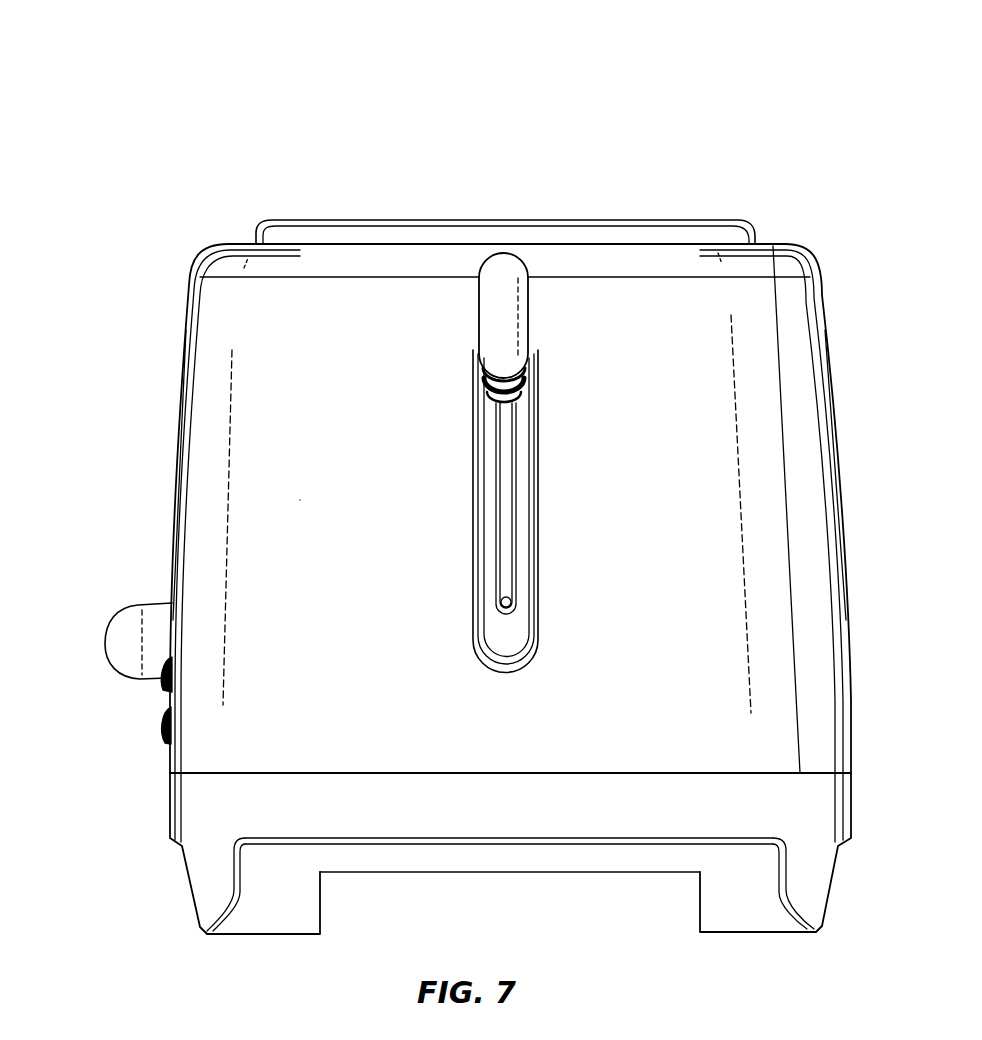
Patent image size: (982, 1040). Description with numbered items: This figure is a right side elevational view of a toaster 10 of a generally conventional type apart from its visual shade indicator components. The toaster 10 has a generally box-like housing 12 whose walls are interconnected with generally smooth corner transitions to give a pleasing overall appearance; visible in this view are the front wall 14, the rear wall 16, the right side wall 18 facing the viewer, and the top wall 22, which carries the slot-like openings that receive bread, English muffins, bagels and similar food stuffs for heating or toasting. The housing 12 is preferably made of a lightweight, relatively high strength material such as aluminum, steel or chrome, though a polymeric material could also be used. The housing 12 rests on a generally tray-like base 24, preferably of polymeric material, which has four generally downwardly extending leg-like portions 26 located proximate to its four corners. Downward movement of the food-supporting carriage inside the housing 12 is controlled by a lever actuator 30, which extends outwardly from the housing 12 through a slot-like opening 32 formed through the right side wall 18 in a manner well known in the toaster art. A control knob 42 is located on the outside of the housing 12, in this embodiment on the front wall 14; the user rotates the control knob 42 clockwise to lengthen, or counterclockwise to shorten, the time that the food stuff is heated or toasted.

The toaster 10 is at (195, 126).
The housing 12 is at (262, 487).
The front wall 14 is at (183, 422).
The rear wall 16 is at (833, 418).
The right side wall 18 is at (657, 423).
The top wall 22 is at (620, 218).
The base 24 is at (476, 822).
The leg-like portions 26 is at (207, 887).
The lever actuator 30 is at (497, 251).
The slot-like opening 32 is at (508, 528).
The control knob 42 is at (107, 643).